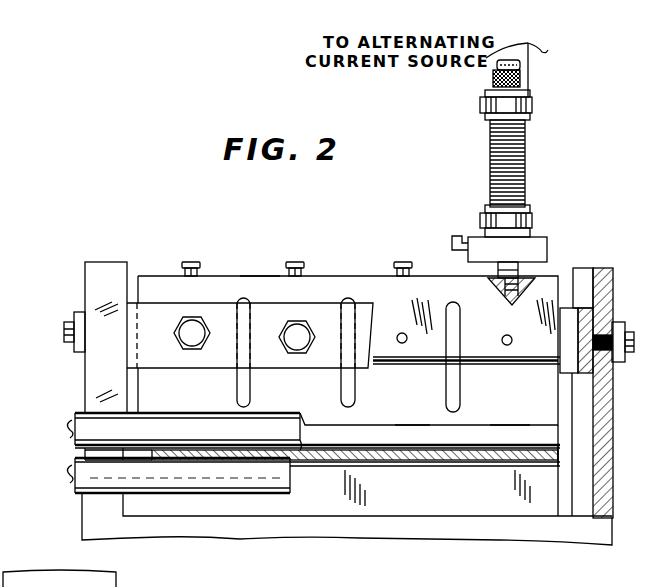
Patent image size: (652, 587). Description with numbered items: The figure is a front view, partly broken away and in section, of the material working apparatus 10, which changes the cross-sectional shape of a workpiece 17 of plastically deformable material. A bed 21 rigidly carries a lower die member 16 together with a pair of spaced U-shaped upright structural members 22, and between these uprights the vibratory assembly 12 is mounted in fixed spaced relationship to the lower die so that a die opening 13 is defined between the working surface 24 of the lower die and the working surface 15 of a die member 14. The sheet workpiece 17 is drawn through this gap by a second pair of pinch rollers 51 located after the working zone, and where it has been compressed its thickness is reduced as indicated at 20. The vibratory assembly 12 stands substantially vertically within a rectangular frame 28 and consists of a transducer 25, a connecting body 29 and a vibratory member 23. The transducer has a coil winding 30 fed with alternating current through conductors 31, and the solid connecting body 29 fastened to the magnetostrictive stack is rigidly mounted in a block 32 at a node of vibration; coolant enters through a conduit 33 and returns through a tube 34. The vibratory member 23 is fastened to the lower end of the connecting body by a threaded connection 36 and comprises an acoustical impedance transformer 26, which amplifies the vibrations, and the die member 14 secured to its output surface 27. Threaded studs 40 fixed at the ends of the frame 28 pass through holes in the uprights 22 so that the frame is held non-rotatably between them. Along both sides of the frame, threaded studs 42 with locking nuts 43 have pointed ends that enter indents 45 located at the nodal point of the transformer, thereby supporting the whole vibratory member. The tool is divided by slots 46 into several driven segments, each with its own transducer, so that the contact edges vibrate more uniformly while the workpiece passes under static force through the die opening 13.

The material working apparatus 10 is at (123, 240).
The vibratory assembly 12 is at (525, 184).
The die opening 13 is at (565, 460).
The die member 14 is at (506, 428).
The working surface 15 is at (378, 462).
The lower die member 16 is at (518, 522).
The workpiece 17 is at (330, 460).
The reduced thickness 20 is at (440, 464).
The bed 21 is at (152, 533).
The U-shaped upright structural members 22 is at (96, 262).
The vibratory member 23 is at (262, 275).
The working surface of lower die 24 is at (494, 466).
The transducer 25 is at (520, 216).
The acoustical impedance transformer 26 is at (148, 282).
The output surface 27 is at (418, 412).
The rectangular frame 28 is at (330, 306).
The connecting body 29 is at (192, 262).
The coil winding 30 is at (490, 158).
The conductors 31 is at (532, 58).
The block 32 is at (530, 242).
The conduit 33 is at (452, 240).
The tube 34 is at (494, 72).
The threaded connection 36 is at (513, 298).
The threaded studs 40 is at (64, 330).
The threaded studs 42 is at (192, 325).
The locking nuts 43 is at (186, 352).
The indents 45 is at (402, 344).
The slots 46 is at (342, 393).
The pinch rollers 51 is at (78, 422).